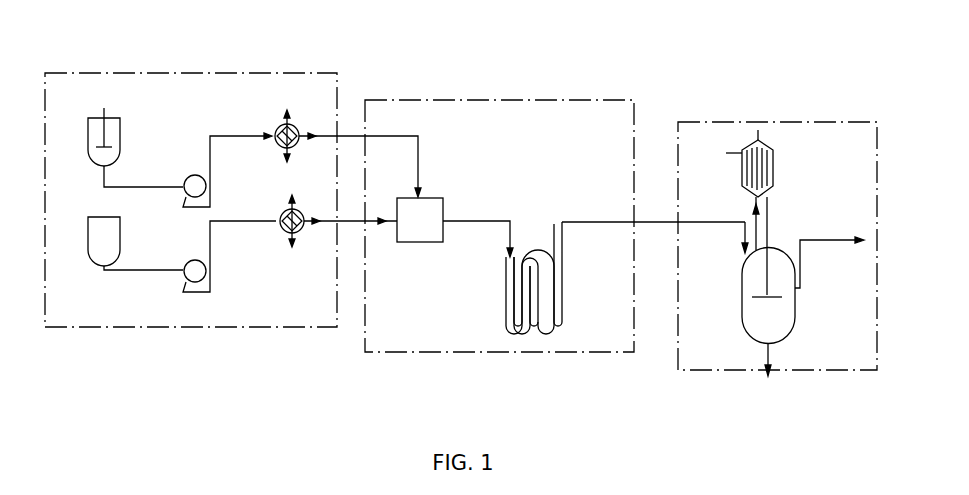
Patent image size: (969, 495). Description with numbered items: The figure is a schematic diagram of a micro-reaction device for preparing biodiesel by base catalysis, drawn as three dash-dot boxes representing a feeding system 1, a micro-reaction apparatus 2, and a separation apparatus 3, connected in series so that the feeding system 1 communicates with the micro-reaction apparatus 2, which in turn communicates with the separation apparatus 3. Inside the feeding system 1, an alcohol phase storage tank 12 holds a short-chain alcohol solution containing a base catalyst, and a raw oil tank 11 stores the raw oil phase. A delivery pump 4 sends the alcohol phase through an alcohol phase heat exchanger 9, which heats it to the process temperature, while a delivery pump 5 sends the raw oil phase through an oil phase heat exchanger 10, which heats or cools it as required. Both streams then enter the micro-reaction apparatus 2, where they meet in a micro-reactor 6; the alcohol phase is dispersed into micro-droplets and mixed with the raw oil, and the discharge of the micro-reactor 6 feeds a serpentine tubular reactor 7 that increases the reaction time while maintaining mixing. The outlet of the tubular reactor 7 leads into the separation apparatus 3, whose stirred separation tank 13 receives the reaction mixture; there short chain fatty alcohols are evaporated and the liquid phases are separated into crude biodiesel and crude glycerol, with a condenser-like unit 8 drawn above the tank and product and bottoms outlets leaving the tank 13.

The feeding system 1 is at (191, 165).
The micro-reaction apparatus 2 is at (507, 191).
The separation apparatus 3 is at (777, 210).
The delivery pump 4 is at (227, 170).
The delivery pump 5 is at (229, 255).
The micro-reactor 6 is at (446, 188).
The tubular reactor 7 is at (594, 255).
The condenser 8 is at (765, 163).
The alcohol phase heat exchanger 9 is at (348, 138).
The oil phase heat exchanger 10 is at (338, 207).
The raw oil tank 11 is at (135, 232).
The alcohol phase storage tank 12 is at (138, 133).
The separation tank 13 is at (803, 277).